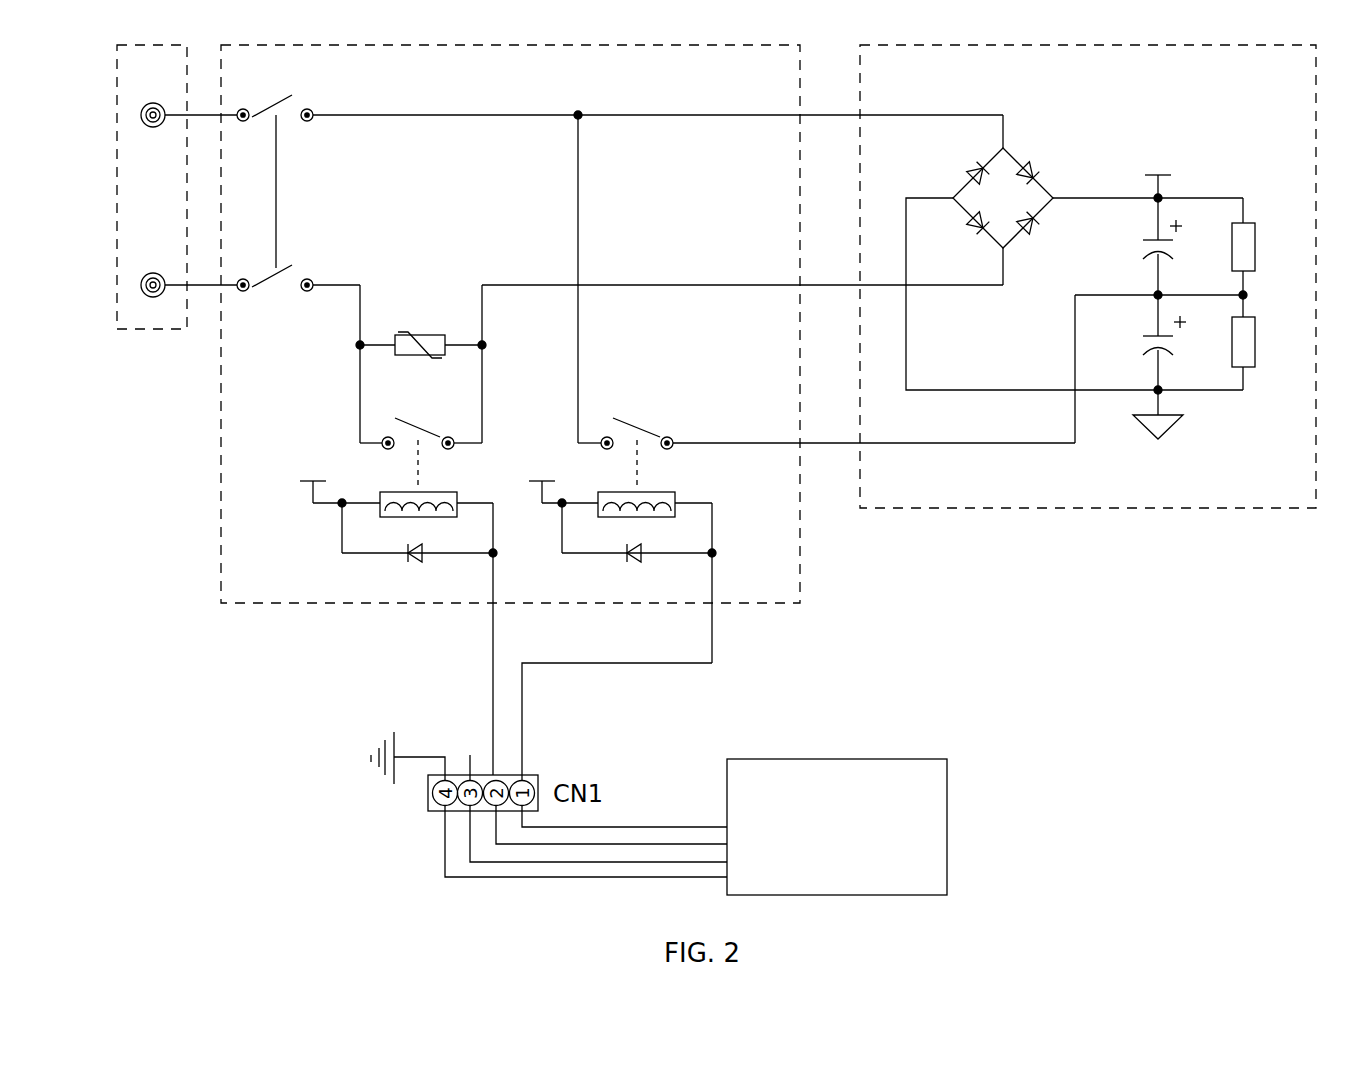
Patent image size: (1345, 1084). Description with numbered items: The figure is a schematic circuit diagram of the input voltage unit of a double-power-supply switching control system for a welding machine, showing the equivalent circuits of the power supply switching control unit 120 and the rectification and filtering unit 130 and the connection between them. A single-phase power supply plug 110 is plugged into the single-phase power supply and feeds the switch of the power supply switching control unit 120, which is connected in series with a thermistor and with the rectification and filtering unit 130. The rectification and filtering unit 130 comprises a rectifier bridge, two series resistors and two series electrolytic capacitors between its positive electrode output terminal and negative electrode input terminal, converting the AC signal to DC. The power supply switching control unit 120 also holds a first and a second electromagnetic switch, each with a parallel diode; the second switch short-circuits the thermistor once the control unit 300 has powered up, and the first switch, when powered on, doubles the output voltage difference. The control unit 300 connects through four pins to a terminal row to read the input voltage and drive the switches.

The single-phase power supply plug 110 is at (147, 330).
The power supply switching control unit 120 is at (290, 603).
The rectification and filtering unit 130 is at (1110, 508).
The control unit 300 is at (947, 826).